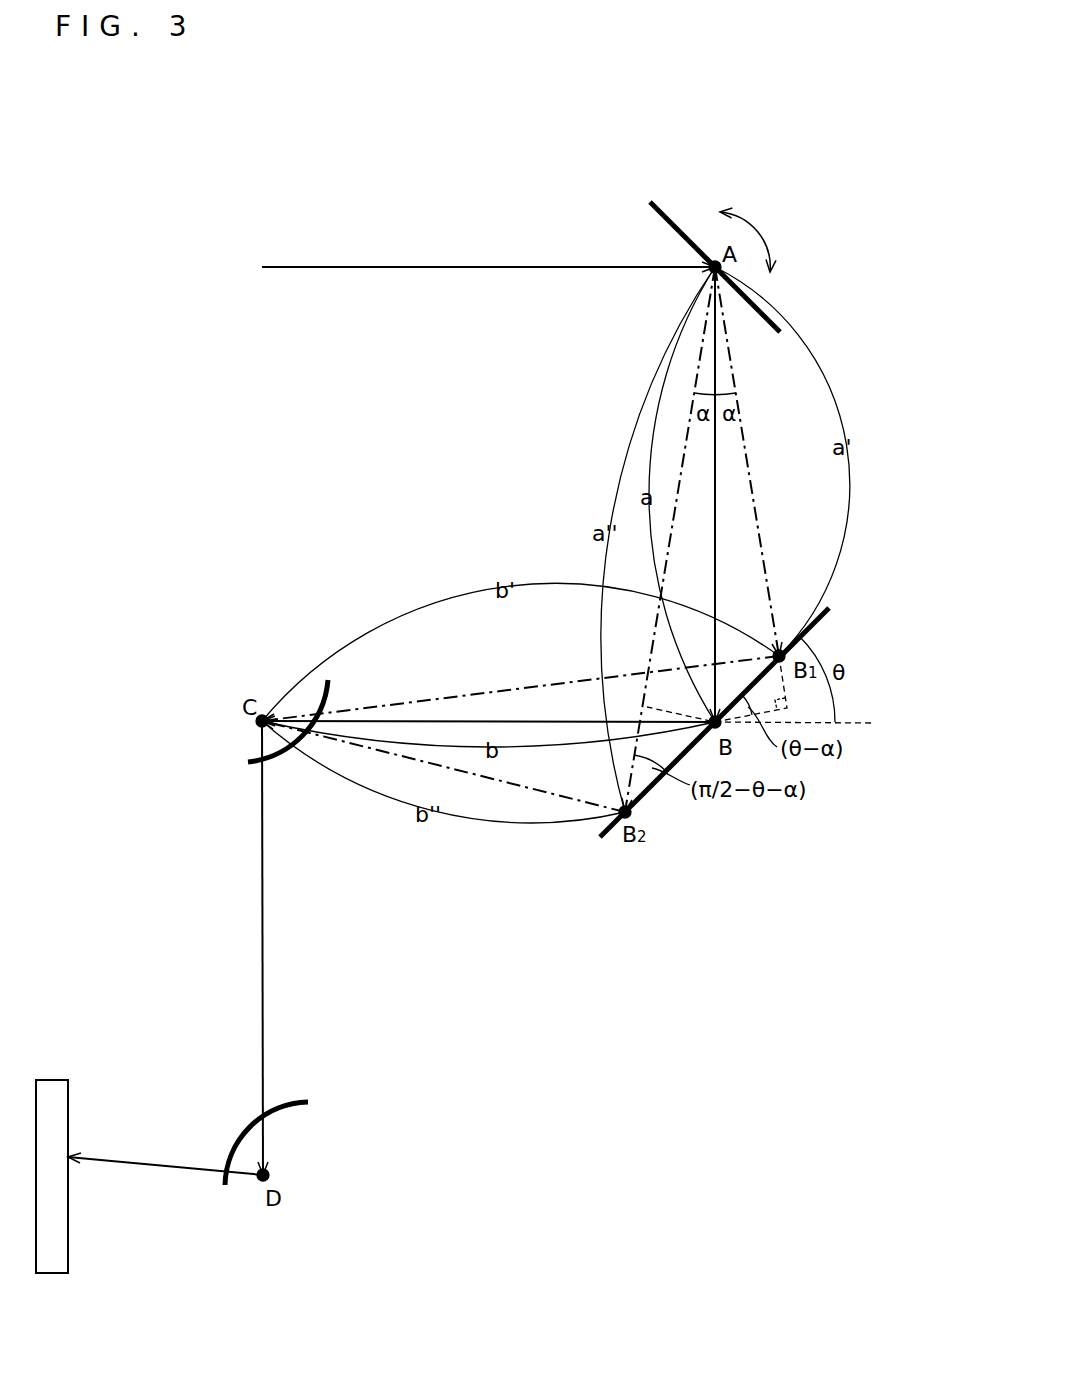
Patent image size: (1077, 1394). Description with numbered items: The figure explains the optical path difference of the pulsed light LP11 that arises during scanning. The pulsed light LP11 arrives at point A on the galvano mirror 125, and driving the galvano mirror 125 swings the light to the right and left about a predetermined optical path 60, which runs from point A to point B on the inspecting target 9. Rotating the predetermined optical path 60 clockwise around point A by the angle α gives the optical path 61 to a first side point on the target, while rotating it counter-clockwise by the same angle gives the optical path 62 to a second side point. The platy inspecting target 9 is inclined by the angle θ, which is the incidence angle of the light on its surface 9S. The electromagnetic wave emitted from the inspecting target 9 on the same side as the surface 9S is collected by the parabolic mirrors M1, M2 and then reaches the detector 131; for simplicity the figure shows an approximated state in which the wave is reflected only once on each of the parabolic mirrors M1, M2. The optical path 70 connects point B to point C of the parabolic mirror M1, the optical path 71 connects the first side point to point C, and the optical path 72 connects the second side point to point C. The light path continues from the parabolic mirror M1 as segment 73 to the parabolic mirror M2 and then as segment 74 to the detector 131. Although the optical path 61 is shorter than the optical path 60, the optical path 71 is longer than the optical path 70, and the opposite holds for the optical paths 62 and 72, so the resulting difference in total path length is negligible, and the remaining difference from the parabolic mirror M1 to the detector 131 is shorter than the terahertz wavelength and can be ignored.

The galvano mirror 125 is at (683, 231).
The pulsed light LP11 is at (515, 268).
The light path segment C-D 73 is at (262, 905).
The predetermined optical path 60 is at (716, 520).
The optical path 61 is at (750, 473).
The optical path 62 is at (688, 412).
The inspecting target 9 is at (714, 705).
The surface 9S is at (815, 622).
The optical path 70 is at (462, 718).
The optical path 71 is at (557, 678).
The optical path 72 is at (552, 796).
The parabolic mirror M1 is at (282, 698).
The parabolic mirror M2 is at (307, 1128).
The ray D to screen 74 is at (200, 1167).
The detector 131 is at (68, 1100).